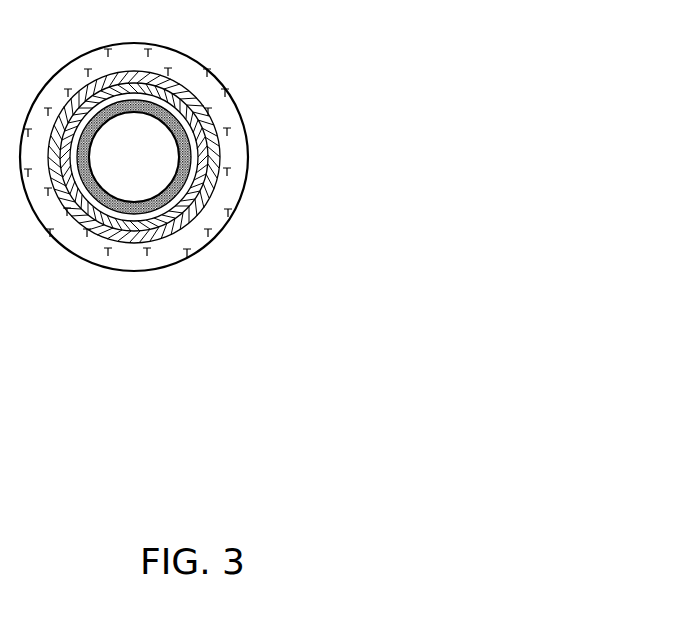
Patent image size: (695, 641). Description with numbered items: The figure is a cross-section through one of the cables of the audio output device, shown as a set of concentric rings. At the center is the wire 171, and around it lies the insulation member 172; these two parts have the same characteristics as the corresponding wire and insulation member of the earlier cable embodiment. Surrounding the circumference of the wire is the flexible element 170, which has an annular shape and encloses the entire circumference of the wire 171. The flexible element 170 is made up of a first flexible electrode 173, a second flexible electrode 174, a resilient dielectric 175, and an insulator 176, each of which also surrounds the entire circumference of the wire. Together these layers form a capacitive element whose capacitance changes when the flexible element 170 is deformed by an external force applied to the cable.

The flexible element 170 is at (350, 28).
The wire 171 is at (160, 185).
The insulation member 172 is at (214, 238).
The first flexible electrode 173 is at (203, 110).
The second flexible electrode 174 is at (190, 199).
The resilient dielectric 175 is at (203, 152).
The insulator 176 is at (226, 100).